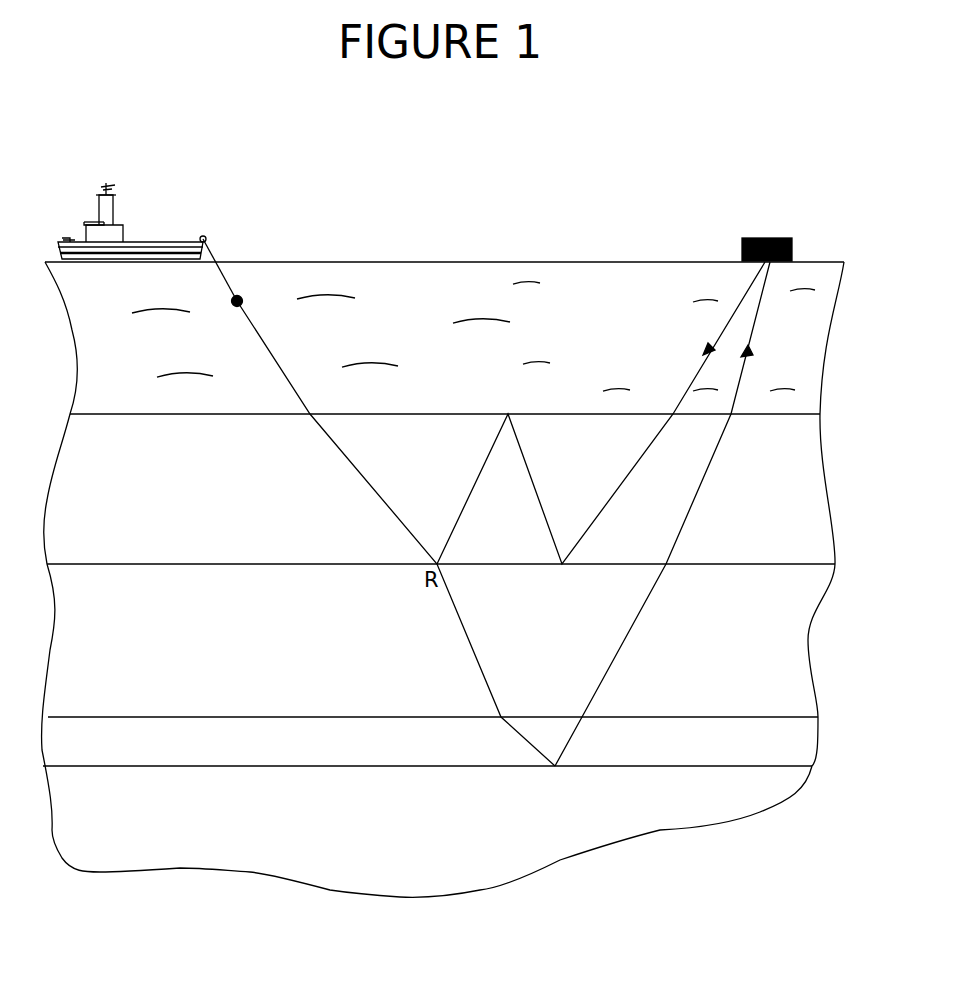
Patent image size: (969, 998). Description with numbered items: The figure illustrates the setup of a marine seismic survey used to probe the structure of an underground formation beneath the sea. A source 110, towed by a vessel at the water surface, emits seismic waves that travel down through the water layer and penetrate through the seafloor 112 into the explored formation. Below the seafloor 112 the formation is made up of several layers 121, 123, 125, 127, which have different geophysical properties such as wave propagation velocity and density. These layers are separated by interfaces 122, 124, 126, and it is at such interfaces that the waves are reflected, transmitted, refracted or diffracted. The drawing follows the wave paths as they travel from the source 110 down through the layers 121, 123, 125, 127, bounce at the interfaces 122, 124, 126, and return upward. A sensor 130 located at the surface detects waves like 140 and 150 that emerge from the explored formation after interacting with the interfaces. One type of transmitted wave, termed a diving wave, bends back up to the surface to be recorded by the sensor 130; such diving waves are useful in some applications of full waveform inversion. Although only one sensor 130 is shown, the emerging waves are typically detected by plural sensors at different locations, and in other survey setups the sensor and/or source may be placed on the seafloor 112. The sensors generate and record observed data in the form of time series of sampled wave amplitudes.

The source 110 is at (237, 300).
The sensor 130 is at (766, 238).
The wave 150 is at (681, 388).
The wave 140 is at (737, 385).
The seafloor 112 is at (470, 415).
The formation layer 121 is at (445, 489).
The interface 122 is at (468, 565).
The formation layer 123 is at (430, 640).
The interface 124 is at (790, 717).
The formation layer 125 is at (430, 741).
The interface 126 is at (790, 766).
The formation layer 127 is at (427, 817).